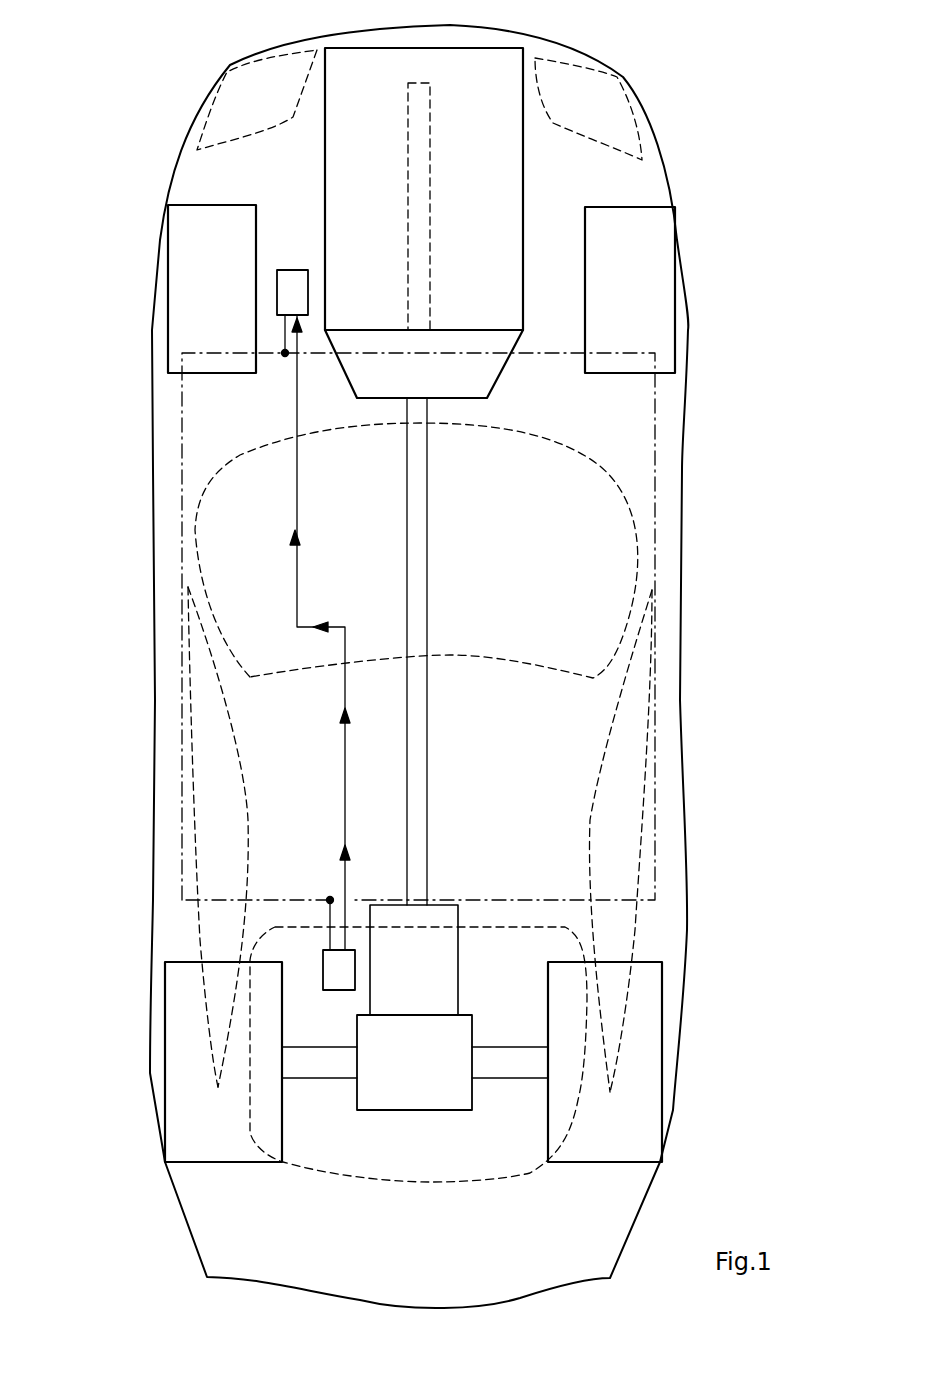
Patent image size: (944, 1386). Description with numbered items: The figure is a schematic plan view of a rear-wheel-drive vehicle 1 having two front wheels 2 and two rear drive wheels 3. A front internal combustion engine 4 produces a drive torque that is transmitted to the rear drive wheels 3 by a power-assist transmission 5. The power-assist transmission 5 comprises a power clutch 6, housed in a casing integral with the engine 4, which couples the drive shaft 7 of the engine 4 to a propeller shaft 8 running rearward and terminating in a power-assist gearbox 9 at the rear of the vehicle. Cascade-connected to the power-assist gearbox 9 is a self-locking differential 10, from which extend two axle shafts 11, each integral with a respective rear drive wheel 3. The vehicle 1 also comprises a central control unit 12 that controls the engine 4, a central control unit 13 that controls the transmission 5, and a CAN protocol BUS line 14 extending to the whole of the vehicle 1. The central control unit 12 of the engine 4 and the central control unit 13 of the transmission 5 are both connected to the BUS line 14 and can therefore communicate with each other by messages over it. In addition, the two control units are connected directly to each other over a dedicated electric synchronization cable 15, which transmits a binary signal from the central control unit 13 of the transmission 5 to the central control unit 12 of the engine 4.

The vehicle 1 is at (140, 1162).
The front wheels 2 is at (176, 242).
The rear drive wheels 3 is at (176, 1048).
The internal combustion engine 4 is at (500, 130).
The power-assist transmission 5 is at (703, 713).
The power clutch 6 is at (482, 383).
The drive shaft 7 is at (407, 97).
The propeller shaft 8 is at (418, 555).
The power-assist gearbox 9 is at (458, 908).
The self-locking differential 10 is at (423, 1103).
The axle shafts 11 is at (318, 1072).
The central control unit 12 is at (292, 275).
The central control unit 13 is at (337, 985).
The BUS line 14 is at (655, 700).
The electric synchronization cable 15 is at (295, 570).